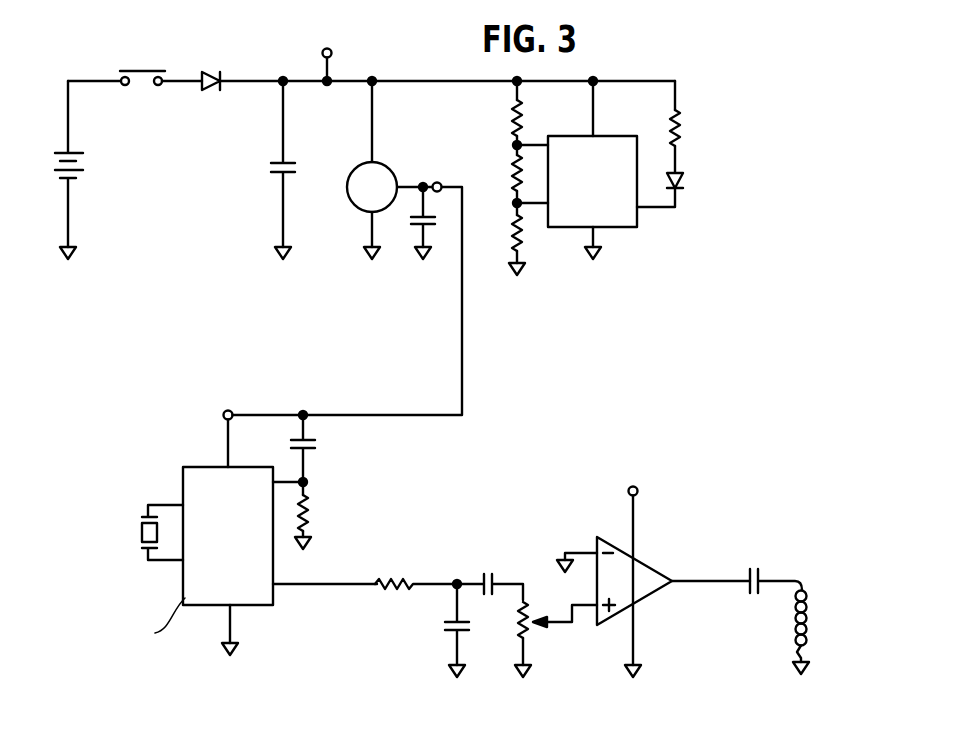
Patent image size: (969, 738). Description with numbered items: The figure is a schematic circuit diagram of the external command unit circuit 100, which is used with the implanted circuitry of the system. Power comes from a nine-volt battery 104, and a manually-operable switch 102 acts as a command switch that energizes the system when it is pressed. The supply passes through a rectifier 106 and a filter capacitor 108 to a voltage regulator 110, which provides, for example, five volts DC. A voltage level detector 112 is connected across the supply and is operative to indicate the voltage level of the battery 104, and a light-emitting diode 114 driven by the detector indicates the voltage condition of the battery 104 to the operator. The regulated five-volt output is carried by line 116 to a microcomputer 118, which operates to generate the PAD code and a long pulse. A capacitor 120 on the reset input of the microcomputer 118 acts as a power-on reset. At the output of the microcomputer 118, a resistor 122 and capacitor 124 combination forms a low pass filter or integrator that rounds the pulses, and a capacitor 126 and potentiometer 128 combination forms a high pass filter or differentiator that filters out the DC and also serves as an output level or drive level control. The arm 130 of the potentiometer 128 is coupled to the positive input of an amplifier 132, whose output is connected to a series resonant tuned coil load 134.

The external command unit circuit 100 is at (258, 338).
The manually-operable switch 102 is at (140, 70).
The 9-volt battery 104 is at (84, 164).
The rectifier 106 is at (216, 73).
The filter capacitor 108 is at (272, 168).
The voltage regulator 110 is at (386, 165).
The voltage level detector 112 is at (621, 210).
The light-emitting diode 114 is at (680, 176).
The supply line 116 is at (460, 297).
The microcomputer 118 is at (188, 582).
The capacitor 120 is at (318, 443).
The resistor 122 is at (400, 581).
The capacitor 124 is at (445, 625).
The capacitor 126 is at (485, 572).
The potentiometer 128 is at (520, 630).
The arm of potentiometer 130 is at (553, 624).
The amplifier 132 is at (630, 570).
The series resonant tuned coil load 134 is at (791, 618).